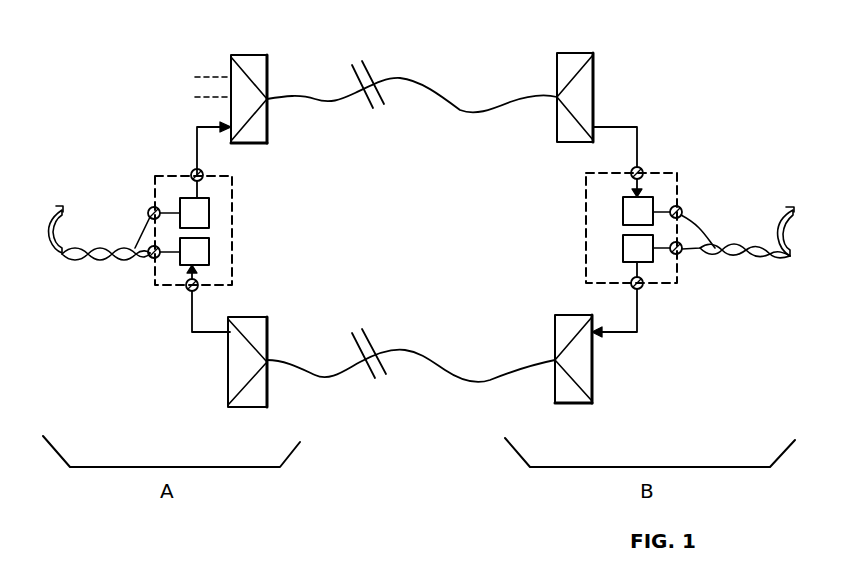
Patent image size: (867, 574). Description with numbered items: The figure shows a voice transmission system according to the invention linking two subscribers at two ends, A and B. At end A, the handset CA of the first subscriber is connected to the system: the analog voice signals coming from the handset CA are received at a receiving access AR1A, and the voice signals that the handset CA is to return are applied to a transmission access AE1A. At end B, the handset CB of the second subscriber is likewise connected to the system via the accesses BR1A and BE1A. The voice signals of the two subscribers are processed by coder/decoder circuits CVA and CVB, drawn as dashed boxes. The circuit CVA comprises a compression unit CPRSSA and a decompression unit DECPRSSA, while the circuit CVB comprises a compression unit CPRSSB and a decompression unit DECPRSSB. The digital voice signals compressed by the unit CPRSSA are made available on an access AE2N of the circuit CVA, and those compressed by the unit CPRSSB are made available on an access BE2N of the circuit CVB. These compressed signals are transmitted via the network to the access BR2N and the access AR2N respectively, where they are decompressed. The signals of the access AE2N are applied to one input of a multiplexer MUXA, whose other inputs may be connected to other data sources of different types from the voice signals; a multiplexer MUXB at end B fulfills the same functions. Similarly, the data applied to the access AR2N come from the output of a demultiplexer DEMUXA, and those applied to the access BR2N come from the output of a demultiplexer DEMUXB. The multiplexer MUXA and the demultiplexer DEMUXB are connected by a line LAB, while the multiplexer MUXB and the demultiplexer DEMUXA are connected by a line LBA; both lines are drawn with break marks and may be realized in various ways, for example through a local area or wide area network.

The multiplexer MUXA is at (248, 55).
The demultiplexer DEMUXA is at (228, 382).
The multiplexer MUXB is at (593, 370).
The demultiplexer DEMUXB is at (590, 53).
The line LAB is at (445, 91).
The line LBA is at (422, 356).
The coder/decoder circuit CVA is at (163, 176).
The coder/decoder circuit CVB is at (680, 174).
The compression unit CPRSSA is at (209, 213).
The decompression unit DECPRSSA is at (209, 252).
The compression unit CPRSSB is at (623, 248).
The decompression unit DECPRSSB is at (623, 212).
The transmission access AE1A is at (149, 257).
The receiving access AR1A is at (148, 212).
The access AE2N is at (204, 173).
The access AR2N is at (186, 292).
The access BE1A is at (682, 210).
The access BR1A is at (682, 252).
The access BE2N is at (643, 289).
The access BR2N is at (643, 169).
The handset CA is at (60, 210).
The handset CB is at (792, 210).